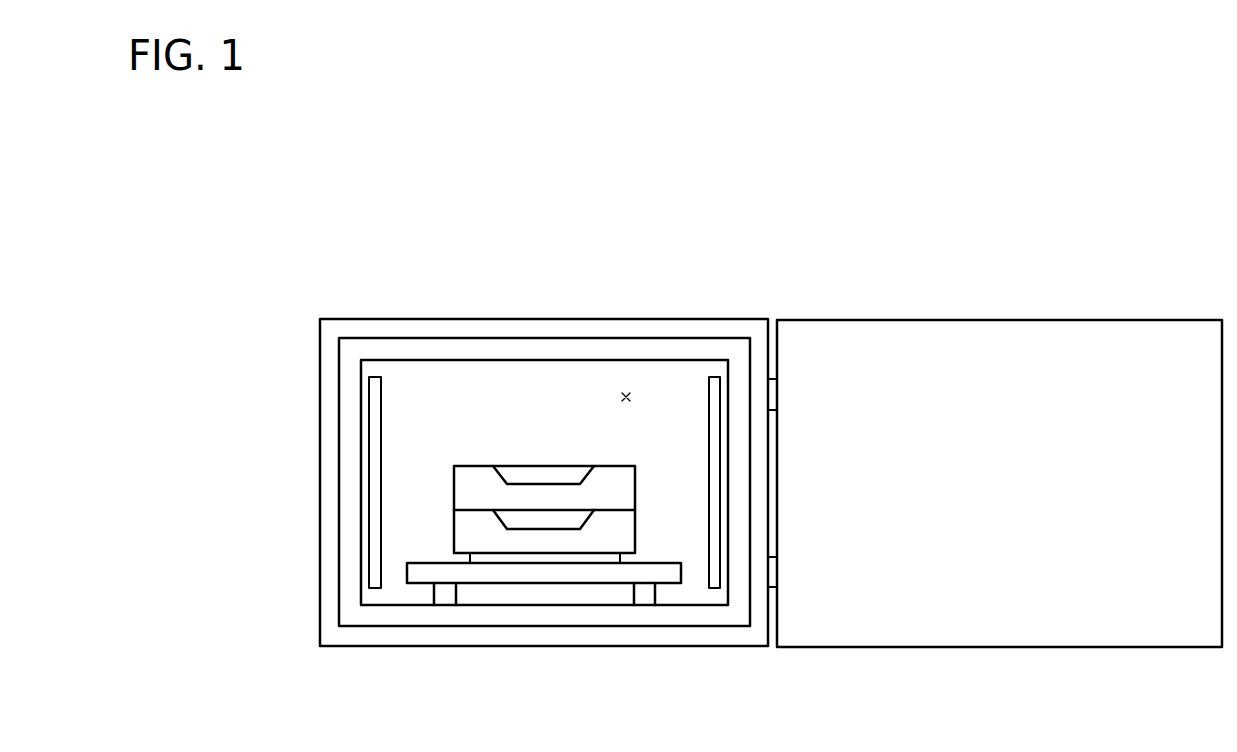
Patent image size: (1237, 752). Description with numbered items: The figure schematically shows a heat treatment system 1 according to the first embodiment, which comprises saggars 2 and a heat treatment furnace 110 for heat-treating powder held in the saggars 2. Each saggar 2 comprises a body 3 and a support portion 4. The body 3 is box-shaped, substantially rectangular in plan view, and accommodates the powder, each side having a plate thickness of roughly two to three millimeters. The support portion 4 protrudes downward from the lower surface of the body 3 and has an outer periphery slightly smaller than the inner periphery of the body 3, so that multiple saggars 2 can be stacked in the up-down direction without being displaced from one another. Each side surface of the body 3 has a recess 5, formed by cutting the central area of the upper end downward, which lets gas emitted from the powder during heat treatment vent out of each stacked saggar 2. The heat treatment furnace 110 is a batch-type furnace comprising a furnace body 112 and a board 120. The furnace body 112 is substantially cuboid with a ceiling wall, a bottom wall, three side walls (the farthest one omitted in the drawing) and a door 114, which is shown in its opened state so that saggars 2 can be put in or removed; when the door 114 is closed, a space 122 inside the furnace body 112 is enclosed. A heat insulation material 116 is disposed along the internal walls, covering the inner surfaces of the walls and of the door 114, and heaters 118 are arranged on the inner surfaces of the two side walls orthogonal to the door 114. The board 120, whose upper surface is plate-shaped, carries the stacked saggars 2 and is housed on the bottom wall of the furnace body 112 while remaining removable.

The heat treatment system 1 is at (847, 216).
The heat treatment furnace 110 is at (533, 246).
The furnace body 112 is at (352, 329).
The door 114 is at (985, 351).
The heat insulation material 116 is at (483, 352).
The heaters 118 is at (375, 412).
The board 120 is at (668, 572).
The space 122 is at (626, 396).
The saggar 2 is at (553, 457).
The body 3 is at (470, 484).
The support portion 4 is at (455, 558).
The recess 5 is at (505, 472).